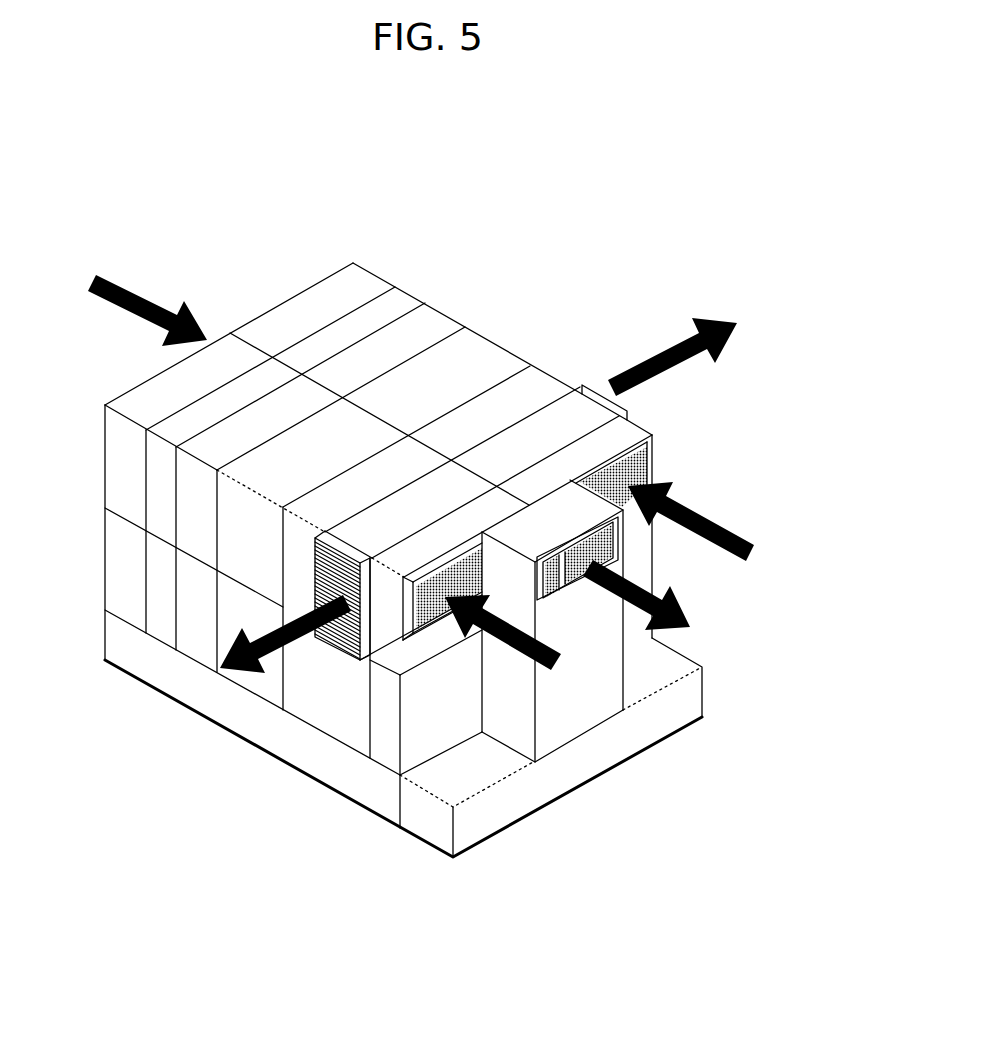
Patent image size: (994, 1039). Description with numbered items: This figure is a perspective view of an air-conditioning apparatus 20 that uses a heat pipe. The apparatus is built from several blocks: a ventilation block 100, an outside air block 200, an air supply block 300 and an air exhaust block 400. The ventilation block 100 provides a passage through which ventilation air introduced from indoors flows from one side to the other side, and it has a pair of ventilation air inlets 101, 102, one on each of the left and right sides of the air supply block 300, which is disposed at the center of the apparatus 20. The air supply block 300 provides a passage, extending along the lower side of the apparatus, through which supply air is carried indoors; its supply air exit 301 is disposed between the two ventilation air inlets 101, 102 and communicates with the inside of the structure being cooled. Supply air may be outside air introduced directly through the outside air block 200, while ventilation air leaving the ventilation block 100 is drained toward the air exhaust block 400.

The air-conditioning apparatus 20 is at (526, 268).
The ventilation block 100 is at (423, 707).
The ventilation air inlet 101 is at (435, 606).
The ventilation air inlet 102 is at (643, 477).
The outside air block 200 is at (269, 311).
The air supply block 300 is at (607, 658).
The supply air exit 301 is at (580, 567).
The air exhaust block 400 is at (337, 631).